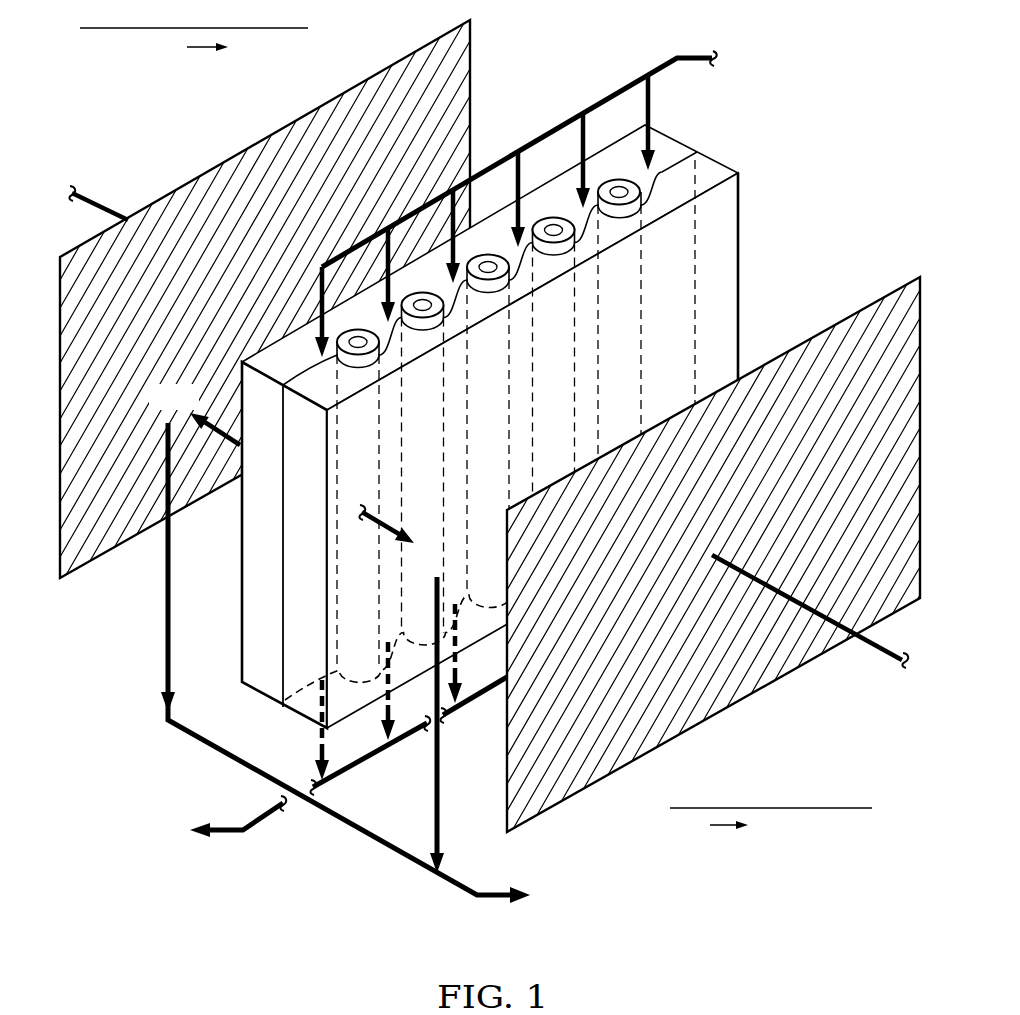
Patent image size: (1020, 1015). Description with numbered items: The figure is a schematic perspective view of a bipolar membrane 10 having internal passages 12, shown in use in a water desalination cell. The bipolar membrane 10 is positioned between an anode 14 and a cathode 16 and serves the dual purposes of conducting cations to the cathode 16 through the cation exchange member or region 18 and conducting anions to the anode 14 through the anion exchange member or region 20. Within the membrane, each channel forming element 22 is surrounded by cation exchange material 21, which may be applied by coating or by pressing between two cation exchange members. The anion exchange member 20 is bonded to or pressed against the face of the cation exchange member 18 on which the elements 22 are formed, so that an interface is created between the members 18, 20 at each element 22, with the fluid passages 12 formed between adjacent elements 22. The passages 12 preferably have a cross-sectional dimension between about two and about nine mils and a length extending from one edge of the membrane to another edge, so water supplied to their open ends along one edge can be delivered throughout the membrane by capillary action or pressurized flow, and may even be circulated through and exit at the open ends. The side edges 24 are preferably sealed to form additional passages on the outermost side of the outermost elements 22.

The bipolar membrane 10 is at (482, 455).
The internal passages 12 is at (648, 178).
The anode 14 is at (845, 320).
The cathode 16 is at (218, 163).
The cation exchange member 18 is at (553, 168).
The anion exchange member 20 is at (740, 192).
The cation exchange material 21 is at (610, 187).
The channel forming element 22 is at (632, 180).
The side edges 24 is at (650, 177).